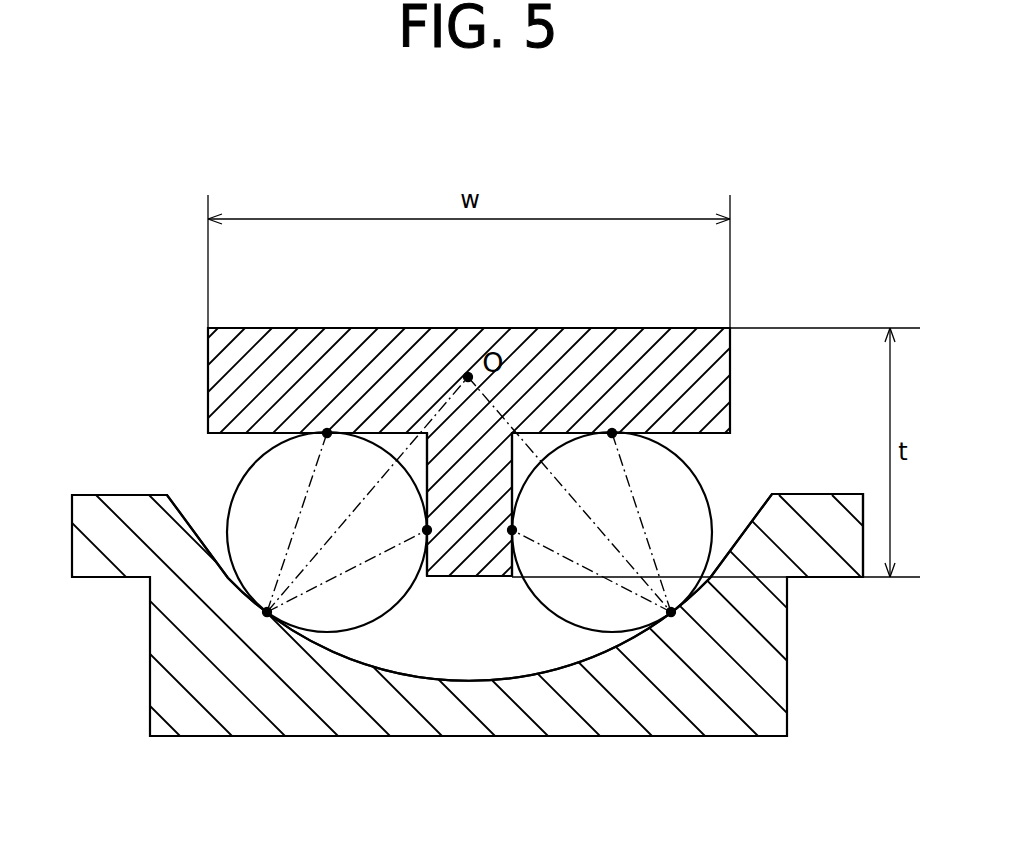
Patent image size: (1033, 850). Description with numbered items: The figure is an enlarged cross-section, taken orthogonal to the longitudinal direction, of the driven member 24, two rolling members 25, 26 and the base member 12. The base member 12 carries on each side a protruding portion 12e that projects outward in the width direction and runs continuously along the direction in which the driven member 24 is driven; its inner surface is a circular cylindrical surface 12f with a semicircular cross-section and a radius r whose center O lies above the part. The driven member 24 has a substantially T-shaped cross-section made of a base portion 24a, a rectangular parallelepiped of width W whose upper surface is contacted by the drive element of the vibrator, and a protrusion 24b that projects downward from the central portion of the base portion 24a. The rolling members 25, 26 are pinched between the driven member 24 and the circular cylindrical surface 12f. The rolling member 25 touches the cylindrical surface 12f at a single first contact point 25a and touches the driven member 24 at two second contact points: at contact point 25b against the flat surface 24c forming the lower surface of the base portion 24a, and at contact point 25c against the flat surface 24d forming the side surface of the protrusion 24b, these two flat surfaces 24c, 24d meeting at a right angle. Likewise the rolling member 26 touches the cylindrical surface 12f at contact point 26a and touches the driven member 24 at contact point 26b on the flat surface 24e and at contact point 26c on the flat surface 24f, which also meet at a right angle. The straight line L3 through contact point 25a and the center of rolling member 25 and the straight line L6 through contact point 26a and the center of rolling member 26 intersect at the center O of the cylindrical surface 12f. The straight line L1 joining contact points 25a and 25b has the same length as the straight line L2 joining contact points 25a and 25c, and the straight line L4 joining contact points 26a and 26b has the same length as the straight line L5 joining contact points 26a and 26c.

The base member 12 is at (163, 673).
The protruding portion 12e is at (97, 514).
The circular cylindrical surface 12f is at (382, 665).
The driven member 24 is at (213, 355).
The base portion 24a is at (248, 345).
The protrusion 24b is at (470, 560).
The flat surface 24c is at (215, 443).
The flat surface 24d is at (415, 462).
The flat surface 24e is at (688, 430).
The flat surface 24f is at (535, 440).
The rolling member 25 is at (253, 493).
The contact point 25a is at (263, 616).
The contact point 25b is at (327, 433).
The contact point 25c is at (427, 533).
The rolling member 26 is at (693, 500).
The contact point 26a is at (671, 616).
The contact point 26b is at (612, 433).
The contact point 26c is at (512, 533).
The straight line L1 is at (293, 540).
The straight line L2 is at (333, 578).
The straight line L3 is at (415, 438).
The straight line L4 is at (633, 488).
The straight line L5 is at (588, 573).
The straight line L6 is at (528, 440).